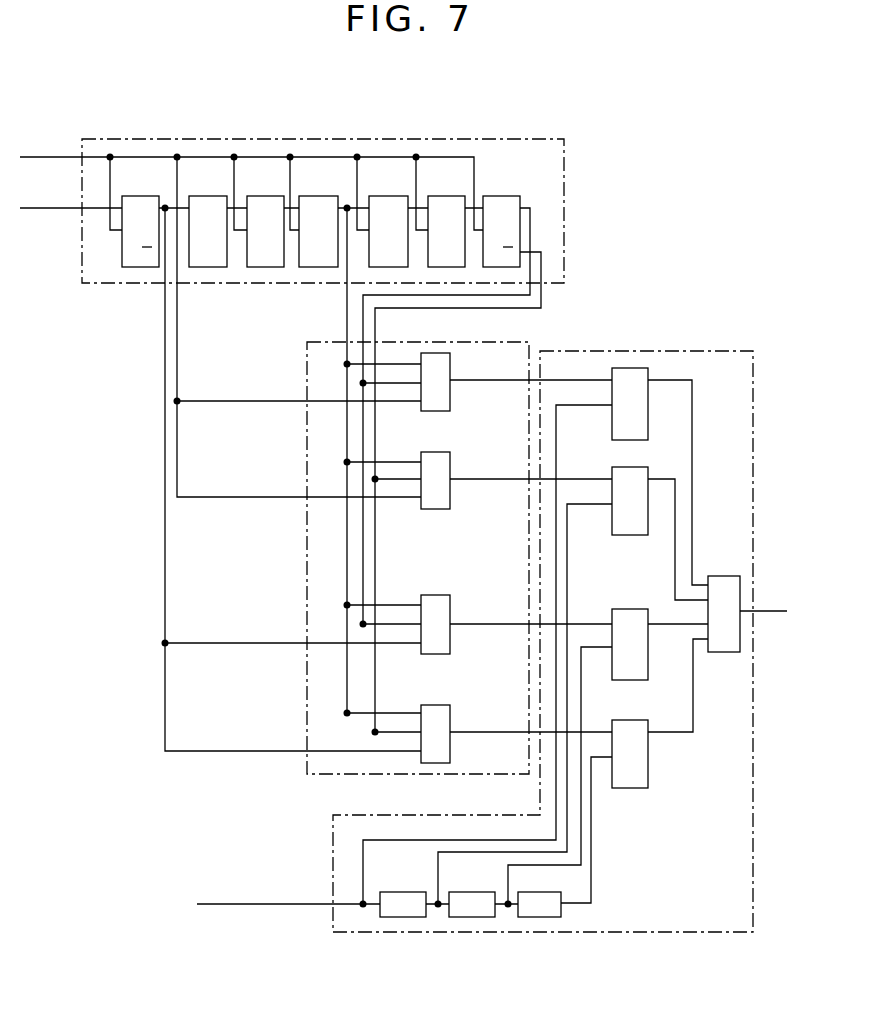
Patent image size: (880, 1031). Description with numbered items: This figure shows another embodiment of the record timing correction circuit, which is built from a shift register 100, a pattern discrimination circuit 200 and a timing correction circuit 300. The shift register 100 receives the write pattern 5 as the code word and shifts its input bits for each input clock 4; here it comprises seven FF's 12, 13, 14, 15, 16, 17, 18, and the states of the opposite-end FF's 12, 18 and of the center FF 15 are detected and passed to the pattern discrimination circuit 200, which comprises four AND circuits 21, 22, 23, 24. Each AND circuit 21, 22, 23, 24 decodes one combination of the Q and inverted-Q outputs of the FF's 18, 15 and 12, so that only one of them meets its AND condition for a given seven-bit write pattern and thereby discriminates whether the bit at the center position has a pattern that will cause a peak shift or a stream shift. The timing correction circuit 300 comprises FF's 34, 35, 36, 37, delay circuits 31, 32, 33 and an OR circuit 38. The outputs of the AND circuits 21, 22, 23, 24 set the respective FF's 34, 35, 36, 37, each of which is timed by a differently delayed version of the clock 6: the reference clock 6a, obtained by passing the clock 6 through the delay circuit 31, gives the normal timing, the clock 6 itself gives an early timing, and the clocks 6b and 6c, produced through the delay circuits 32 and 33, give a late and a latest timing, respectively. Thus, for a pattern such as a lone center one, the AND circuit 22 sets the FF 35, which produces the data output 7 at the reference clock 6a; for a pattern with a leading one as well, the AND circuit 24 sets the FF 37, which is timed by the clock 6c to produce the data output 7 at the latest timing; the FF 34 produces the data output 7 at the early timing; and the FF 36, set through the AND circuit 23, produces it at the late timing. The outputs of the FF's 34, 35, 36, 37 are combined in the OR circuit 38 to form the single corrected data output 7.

The input clock 4 is at (50, 157).
The write pattern 5 is at (40, 208).
The clock 6 is at (234, 904).
The data output 7 is at (772, 608).
The FF 12 is at (515, 196).
The FF 13 is at (455, 196).
The FF 14 is at (399, 196).
The FF 15 is at (325, 196).
The FF 16 is at (273, 196).
The FF 17 is at (213, 196).
The FF 18 is at (148, 196).
The AND circuit 21 is at (450, 362).
The AND circuit 22 is at (450, 462).
The AND circuit 23 is at (450, 608).
The AND circuit 24 is at (450, 717).
The delay circuit 31 is at (404, 892).
The delay circuit 32 is at (482, 892).
The delay circuit 33 is at (561, 912).
The FF 34 is at (648, 396).
The FF 35 is at (612, 467).
The FF 36 is at (638, 609).
The FF 37 is at (637, 720).
The OR circuit 38 is at (722, 576).
The reference clock 6a is at (567, 538).
The clock 6b is at (581, 672).
The clock 6c is at (591, 838).
The shift register 100 is at (519, 137).
The pattern discrimination circuit 200 is at (305, 378).
The timing correction circuit 300 is at (679, 350).